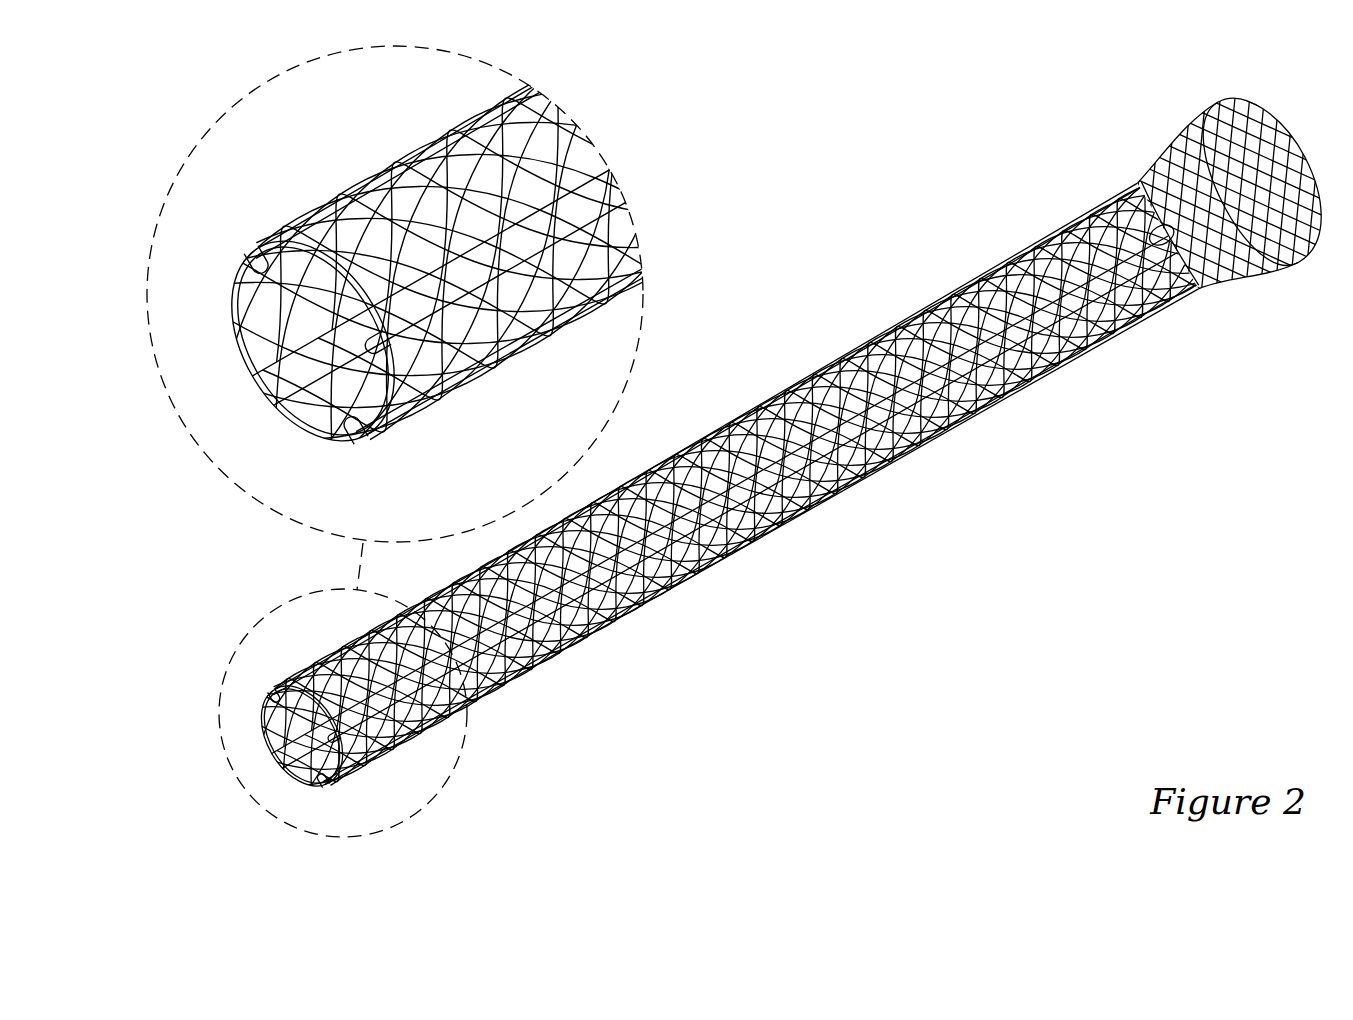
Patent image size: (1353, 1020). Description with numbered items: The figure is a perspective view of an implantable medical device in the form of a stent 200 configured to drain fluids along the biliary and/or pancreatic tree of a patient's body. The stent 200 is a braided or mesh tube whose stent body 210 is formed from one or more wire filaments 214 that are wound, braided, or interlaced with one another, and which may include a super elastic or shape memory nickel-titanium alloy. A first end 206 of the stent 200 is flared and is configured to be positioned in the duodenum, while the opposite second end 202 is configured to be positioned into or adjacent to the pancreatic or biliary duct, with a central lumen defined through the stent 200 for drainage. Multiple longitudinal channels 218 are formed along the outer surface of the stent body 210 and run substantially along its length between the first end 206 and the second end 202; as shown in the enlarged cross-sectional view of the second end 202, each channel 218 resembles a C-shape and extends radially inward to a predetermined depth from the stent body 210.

The stent 200 is at (676, 456).
The second end 202 is at (280, 432).
The first end 206 is at (1174, 128).
The stent body 210 is at (676, 456).
The wire filaments 214 is at (462, 152).
The longitudinal channels 218 is at (260, 252).